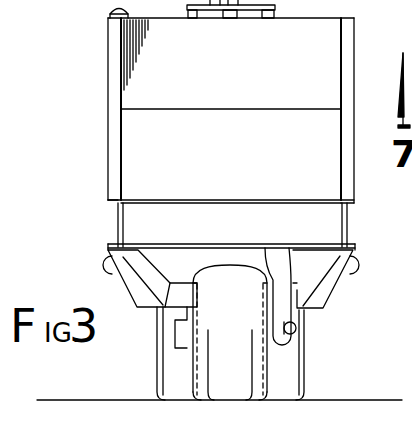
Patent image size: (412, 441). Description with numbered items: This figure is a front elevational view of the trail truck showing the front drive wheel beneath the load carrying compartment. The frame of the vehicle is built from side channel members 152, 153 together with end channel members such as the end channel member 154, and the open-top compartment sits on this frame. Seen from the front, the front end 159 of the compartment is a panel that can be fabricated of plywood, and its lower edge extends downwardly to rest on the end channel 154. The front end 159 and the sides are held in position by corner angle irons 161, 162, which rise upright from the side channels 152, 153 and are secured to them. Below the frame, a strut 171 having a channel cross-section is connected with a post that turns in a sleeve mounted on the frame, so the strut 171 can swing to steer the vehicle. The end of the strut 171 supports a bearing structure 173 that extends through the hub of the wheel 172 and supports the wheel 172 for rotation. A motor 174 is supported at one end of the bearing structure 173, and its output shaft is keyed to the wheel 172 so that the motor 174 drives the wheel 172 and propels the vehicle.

The side channel member 152 is at (118, 209).
The side channel member 153 is at (347, 244).
The end channel member 154 is at (345, 225).
The front end 159 is at (327, 58).
The corner angle iron 161 is at (113, 132).
The corner angle iron 162 is at (349, 83).
The strut 171 is at (287, 311).
The wheel 172 is at (220, 367).
The bearing structure 173 is at (180, 339).
The motor 174 is at (284, 346).